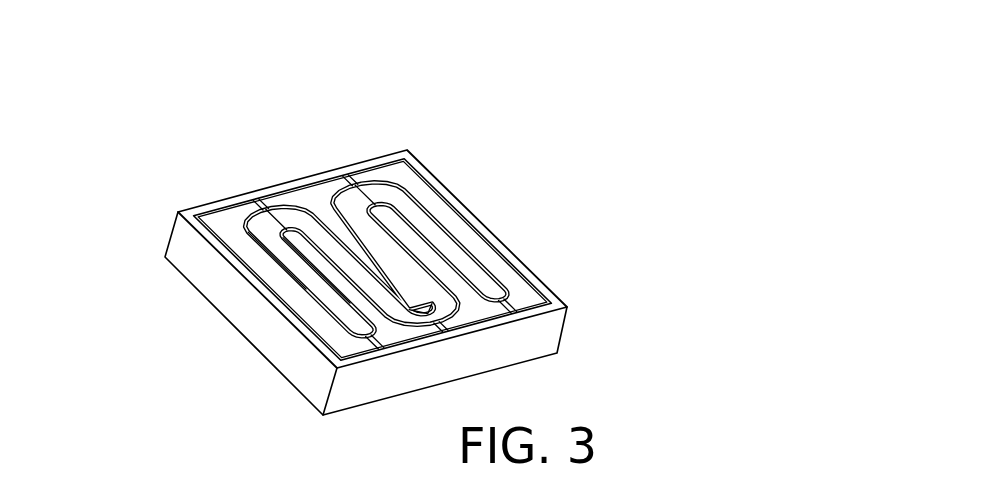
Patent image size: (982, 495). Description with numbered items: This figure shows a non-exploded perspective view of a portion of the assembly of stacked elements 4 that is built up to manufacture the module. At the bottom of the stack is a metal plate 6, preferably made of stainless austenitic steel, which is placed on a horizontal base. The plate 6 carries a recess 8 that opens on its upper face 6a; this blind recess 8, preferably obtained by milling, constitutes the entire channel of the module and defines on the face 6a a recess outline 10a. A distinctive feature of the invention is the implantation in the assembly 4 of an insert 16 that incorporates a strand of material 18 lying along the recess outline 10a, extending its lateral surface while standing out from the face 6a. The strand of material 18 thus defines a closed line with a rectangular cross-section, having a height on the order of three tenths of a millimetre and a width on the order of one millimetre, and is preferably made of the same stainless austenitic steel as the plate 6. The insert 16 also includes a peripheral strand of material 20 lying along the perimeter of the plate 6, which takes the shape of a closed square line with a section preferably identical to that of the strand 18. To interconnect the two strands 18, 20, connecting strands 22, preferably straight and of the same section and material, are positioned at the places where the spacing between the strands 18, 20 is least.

The assembly of stacked elements 4 is at (319, 128).
The metal plate 6 is at (550, 329).
The upper face 6a is at (252, 260).
The recess 8 is at (438, 237).
The recess outline 10a is at (315, 279).
The insert 16 is at (194, 235).
The strand of material 18 is at (252, 218).
The peripheral strand of material 20 is at (220, 200).
The connecting strands 22 is at (268, 196).